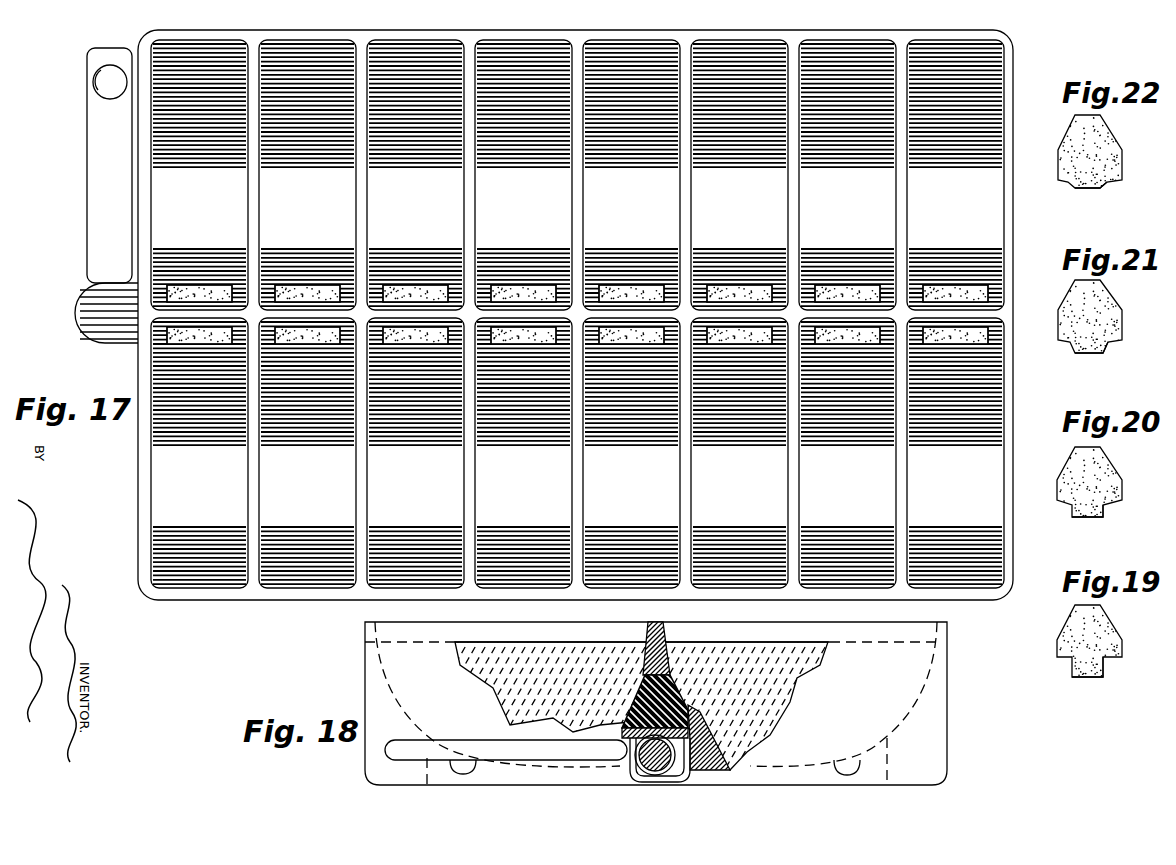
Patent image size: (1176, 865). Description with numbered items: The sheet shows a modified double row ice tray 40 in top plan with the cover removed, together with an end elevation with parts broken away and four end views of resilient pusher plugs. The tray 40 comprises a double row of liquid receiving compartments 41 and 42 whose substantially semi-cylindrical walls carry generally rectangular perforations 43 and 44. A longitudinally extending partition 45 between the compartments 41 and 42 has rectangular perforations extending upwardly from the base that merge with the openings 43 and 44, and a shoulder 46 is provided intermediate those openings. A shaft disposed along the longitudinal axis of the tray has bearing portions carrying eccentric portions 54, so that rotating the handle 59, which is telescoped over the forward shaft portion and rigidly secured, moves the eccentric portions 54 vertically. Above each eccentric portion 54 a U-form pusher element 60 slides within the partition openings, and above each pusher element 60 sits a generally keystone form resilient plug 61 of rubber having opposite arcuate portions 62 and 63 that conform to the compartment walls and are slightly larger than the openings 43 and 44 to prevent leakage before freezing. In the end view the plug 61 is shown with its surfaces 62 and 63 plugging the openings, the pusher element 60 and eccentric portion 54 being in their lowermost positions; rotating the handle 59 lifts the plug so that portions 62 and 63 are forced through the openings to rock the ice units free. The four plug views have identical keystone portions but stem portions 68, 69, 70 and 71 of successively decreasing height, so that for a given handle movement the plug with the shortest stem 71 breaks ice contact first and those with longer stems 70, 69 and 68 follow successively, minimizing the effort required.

In FIG. 17, the tray 40 is at (215, 601).
In FIG. 18, the tray 40 is at (948, 746).
In FIG. 17, the compartment 41 is at (469, 175).
In FIG. 17, the compartment 42 is at (469, 453).
In FIG. 17, the perforation 43 is at (190, 291).
In FIG. 17, the perforation 44 is at (170, 334).
In FIG. 17, the partition 45 is at (700, 324).
In FIG. 18, the partition 45 is at (664, 680).
In FIG. 18, the shoulder 46 is at (648, 674).
In FIG. 18, the eccentric portion 54 is at (652, 752).
In FIG. 17, the handle 59 is at (90, 213).
In FIG. 18, the handle 59 is at (470, 744).
In FIG. 18, the pusher element 60 is at (688, 746).
In FIG. 18, the resilient plug 61 is at (678, 702).
In FIG. 17, the arcuate portion 62 is at (990, 294).
In FIG. 18, the arcuate portion 62 is at (630, 722).
In FIG. 22, the arcuate portion 62 is at (1066, 136).
In FIG. 21, the arcuate portion 62 is at (1066, 301).
In FIG. 20, the arcuate portion 62 is at (1066, 466).
In FIG. 19, the arcuate portion 62 is at (1066, 626).
In FIG. 17, the arcuate portion 63 is at (990, 340).
In FIG. 18, the arcuate portion 63 is at (692, 682).
In FIG. 22, the arcuate portion 63 is at (1107, 120).
In FIG. 21, the arcuate portion 63 is at (1107, 285).
In FIG. 20, the arcuate portion 63 is at (1107, 450).
In FIG. 19, the arcuate portion 63 is at (1107, 612).
In FIG. 19, the stem portion 68 is at (1101, 672).
In FIG. 20, the stem portion 69 is at (1100, 512).
In FIG. 21, the stem portion 70 is at (1105, 348).
In FIG. 22, the stem portion 71 is at (1104, 182).